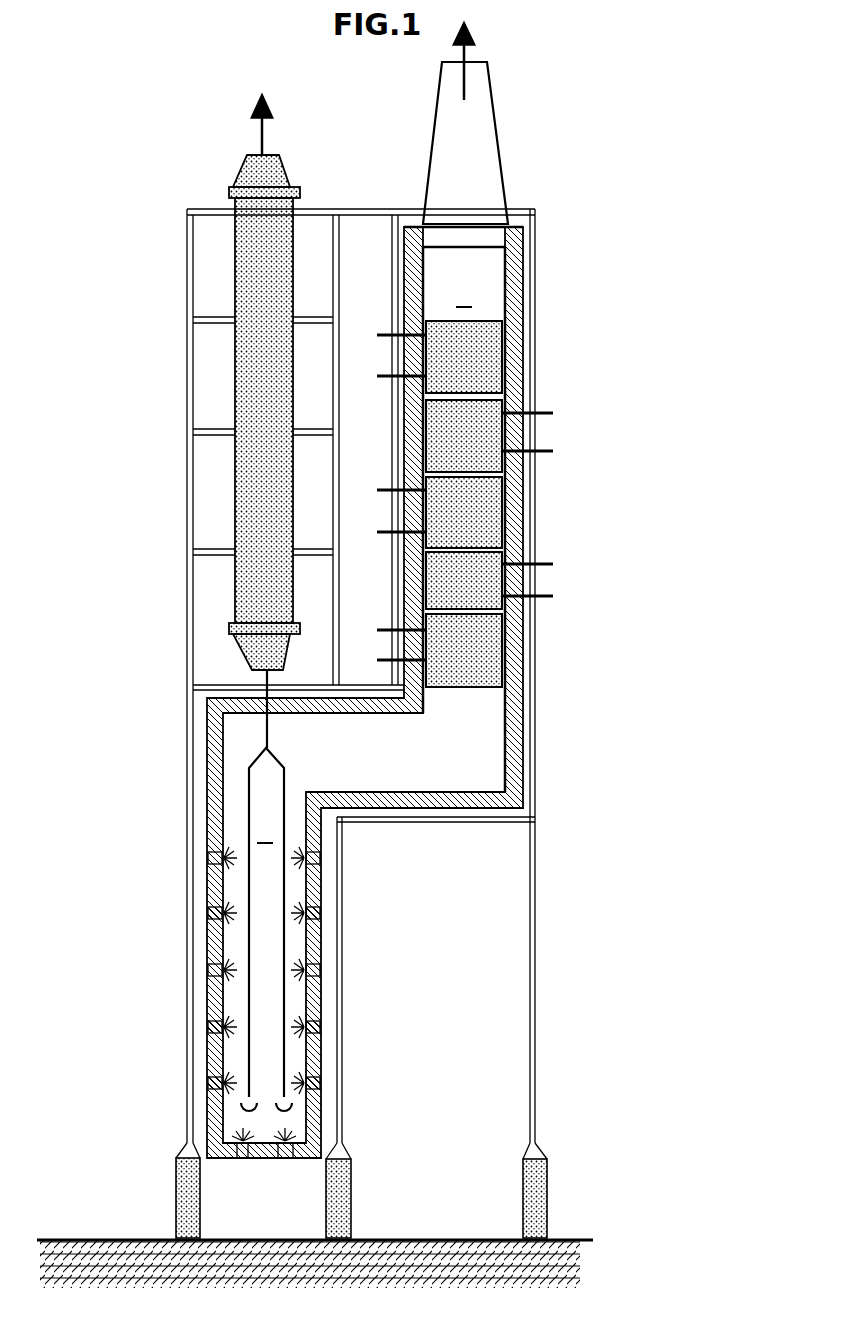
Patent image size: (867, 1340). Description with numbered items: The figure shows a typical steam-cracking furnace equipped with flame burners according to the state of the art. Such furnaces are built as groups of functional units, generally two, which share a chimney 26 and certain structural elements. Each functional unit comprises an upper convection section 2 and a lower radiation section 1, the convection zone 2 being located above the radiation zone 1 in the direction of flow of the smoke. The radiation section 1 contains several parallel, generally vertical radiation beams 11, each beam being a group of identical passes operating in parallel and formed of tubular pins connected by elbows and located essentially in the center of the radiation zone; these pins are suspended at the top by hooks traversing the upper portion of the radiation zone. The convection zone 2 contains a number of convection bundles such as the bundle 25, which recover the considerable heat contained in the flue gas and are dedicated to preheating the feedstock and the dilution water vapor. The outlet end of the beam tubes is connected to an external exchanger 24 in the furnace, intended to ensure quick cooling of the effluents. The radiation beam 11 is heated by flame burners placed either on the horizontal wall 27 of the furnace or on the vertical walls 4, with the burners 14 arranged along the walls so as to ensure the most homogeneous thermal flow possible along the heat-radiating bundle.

The radiation section 1 is at (324, 729).
The convection section 2 is at (504, 509).
The vertical walls 4 is at (207, 880).
The radiation beam 11 is at (249, 1070).
The radiant burners 14 is at (210, 975).
The external exchanger 24 is at (253, 290).
The convection bundle 25 is at (467, 525).
The chimney 26 is at (480, 140).
The horizontal wall 27 is at (268, 1158).